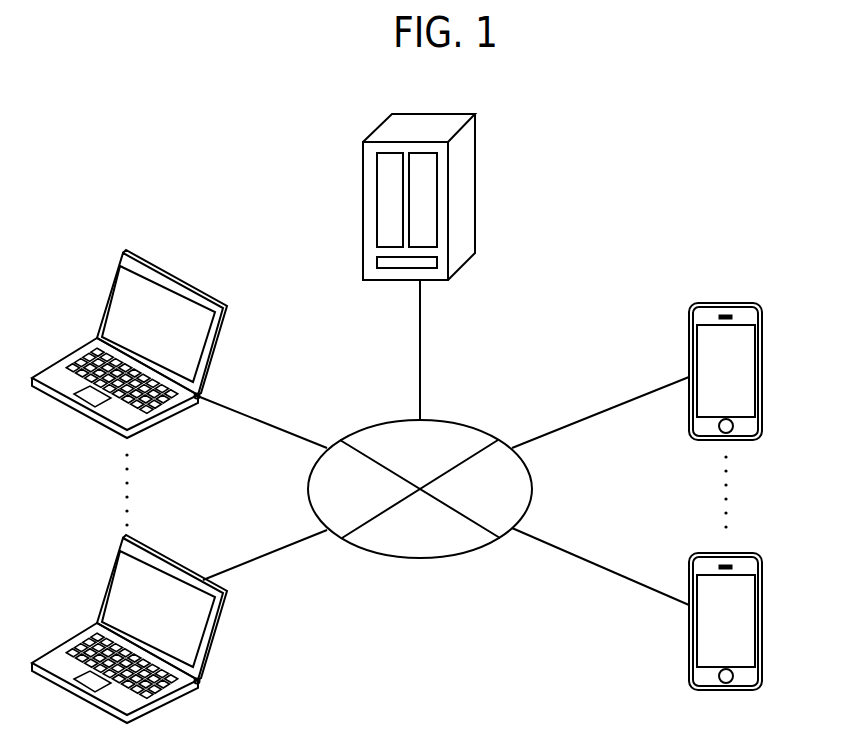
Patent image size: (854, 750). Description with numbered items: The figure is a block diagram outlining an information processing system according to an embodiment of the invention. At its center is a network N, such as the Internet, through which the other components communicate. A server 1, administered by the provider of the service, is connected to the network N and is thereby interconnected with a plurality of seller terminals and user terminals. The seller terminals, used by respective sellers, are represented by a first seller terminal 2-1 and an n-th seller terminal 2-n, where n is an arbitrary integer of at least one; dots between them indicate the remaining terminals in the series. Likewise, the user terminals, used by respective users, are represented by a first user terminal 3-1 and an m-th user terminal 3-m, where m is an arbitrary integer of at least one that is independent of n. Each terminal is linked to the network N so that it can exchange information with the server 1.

The server 1 is at (448, 114).
The network N is at (478, 430).
The seller terminal 2-1 is at (177, 283).
The seller terminal 2-n is at (173, 569).
The user terminal 3-1 is at (740, 303).
The user terminal 3-m is at (740, 553).